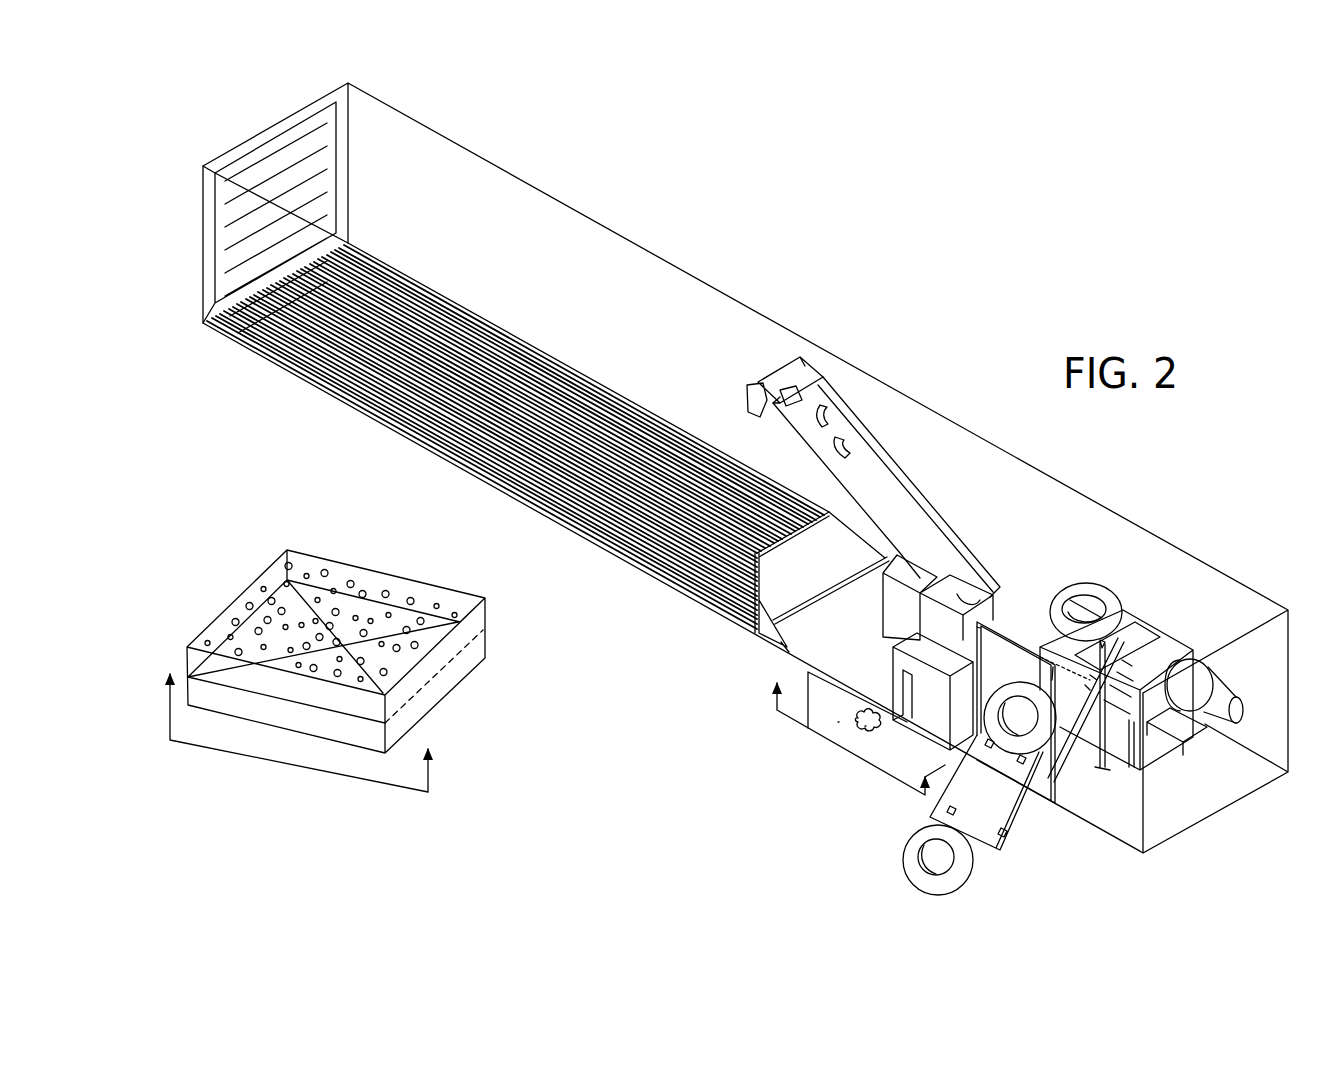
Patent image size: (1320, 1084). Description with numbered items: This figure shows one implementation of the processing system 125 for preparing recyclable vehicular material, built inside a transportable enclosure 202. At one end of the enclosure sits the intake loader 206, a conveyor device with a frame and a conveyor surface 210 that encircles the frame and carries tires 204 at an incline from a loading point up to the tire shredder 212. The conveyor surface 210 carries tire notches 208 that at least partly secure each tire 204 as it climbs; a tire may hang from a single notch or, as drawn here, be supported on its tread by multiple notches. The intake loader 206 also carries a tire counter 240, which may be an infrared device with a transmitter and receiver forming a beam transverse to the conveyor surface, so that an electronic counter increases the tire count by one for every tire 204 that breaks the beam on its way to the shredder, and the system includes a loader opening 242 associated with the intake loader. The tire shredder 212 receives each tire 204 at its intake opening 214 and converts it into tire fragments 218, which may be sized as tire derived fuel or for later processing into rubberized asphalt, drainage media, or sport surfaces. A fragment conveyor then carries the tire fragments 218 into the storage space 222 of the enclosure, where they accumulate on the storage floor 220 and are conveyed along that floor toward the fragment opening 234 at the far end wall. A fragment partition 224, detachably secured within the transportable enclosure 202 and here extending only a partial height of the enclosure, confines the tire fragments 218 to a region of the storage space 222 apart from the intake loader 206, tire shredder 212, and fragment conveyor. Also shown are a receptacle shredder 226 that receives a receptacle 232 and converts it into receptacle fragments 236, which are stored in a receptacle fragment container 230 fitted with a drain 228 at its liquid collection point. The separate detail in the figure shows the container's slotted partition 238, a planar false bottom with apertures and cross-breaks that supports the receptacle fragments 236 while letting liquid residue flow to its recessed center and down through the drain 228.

The processing system 125 is at (804, 198).
The transportable enclosure 202 is at (520, 171).
The tire 204 is at (898, 859).
The intake loader 206 is at (1030, 822).
The tire notch 208 is at (982, 842).
The conveyor surface 210 is at (1006, 798).
The tire shredder 212 is at (1212, 660).
The intake opening 214 is at (1142, 628).
The tire fragments 218 is at (835, 409).
The storage floor 220 is at (606, 381).
The storage space 222 is at (537, 252).
The fragment partition 224 is at (750, 568).
The receptacle shredder 226 is at (934, 662).
The drain 228 is at (826, 729).
The receptacle fragment container 230 is at (822, 692).
The receptacle 232 is at (978, 588).
The fragment opening 234 is at (204, 250).
The receptacle fragments 236 is at (860, 737).
The slotted partition 238 is at (276, 628).
The tire counter 240 is at (1168, 744).
The loader opening 242 is at (1100, 770).